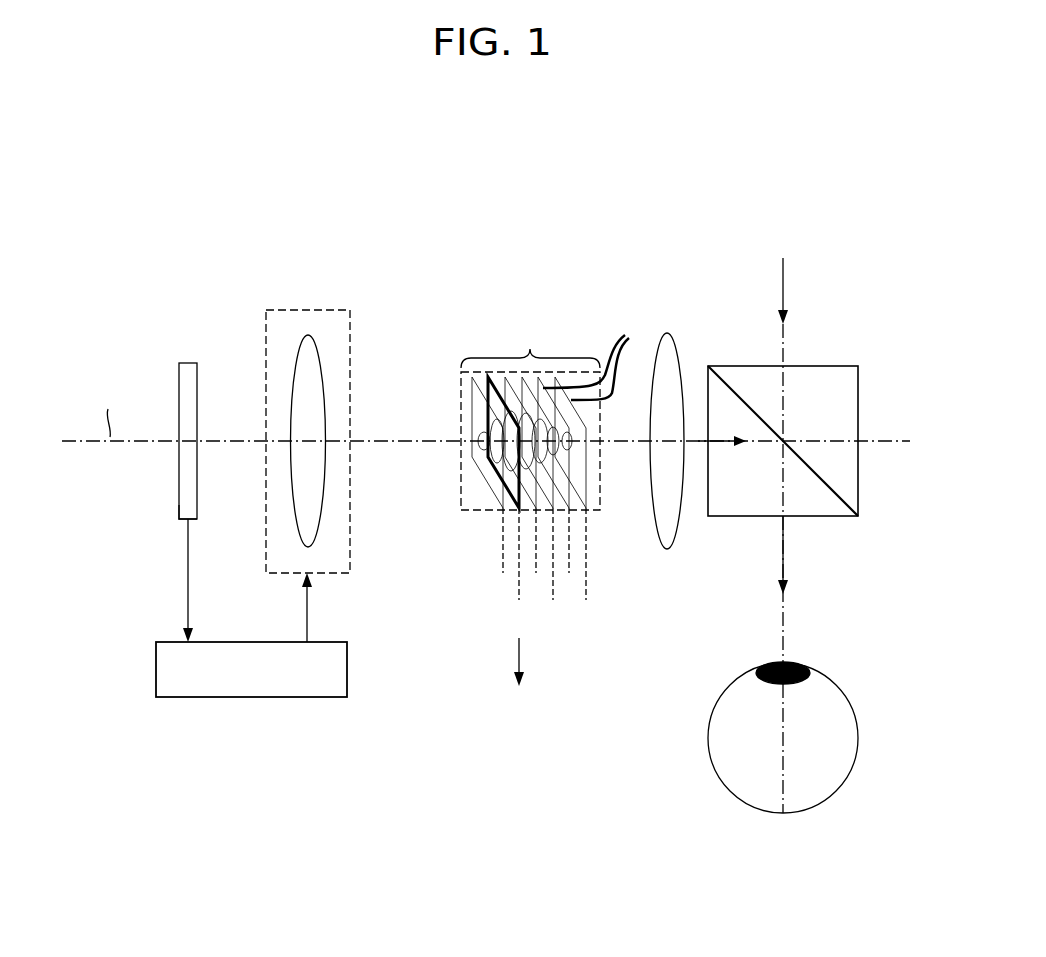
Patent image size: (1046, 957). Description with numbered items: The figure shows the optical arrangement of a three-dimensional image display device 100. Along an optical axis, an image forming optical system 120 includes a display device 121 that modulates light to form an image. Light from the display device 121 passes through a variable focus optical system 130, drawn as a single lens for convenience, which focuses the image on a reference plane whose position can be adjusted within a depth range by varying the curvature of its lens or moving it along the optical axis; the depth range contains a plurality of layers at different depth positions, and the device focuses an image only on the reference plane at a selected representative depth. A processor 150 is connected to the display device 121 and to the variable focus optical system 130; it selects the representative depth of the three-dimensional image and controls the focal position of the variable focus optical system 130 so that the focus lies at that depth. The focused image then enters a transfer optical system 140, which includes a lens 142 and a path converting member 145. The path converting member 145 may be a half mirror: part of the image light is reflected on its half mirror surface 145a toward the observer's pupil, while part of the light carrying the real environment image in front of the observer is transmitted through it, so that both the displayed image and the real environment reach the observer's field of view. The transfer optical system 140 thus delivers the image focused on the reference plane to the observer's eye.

The 3D image display device 100 is at (700, 209).
The image forming optical system 120 is at (188, 353).
The display device 121 is at (185, 511).
The variable focus optical system 130 is at (307, 300).
The transfer optical system 140 is at (755, 612).
The lens 142 is at (667, 549).
The path converting member 145 is at (735, 516).
The half mirror surface 145a is at (824, 480).
The processor 150 is at (250, 698).